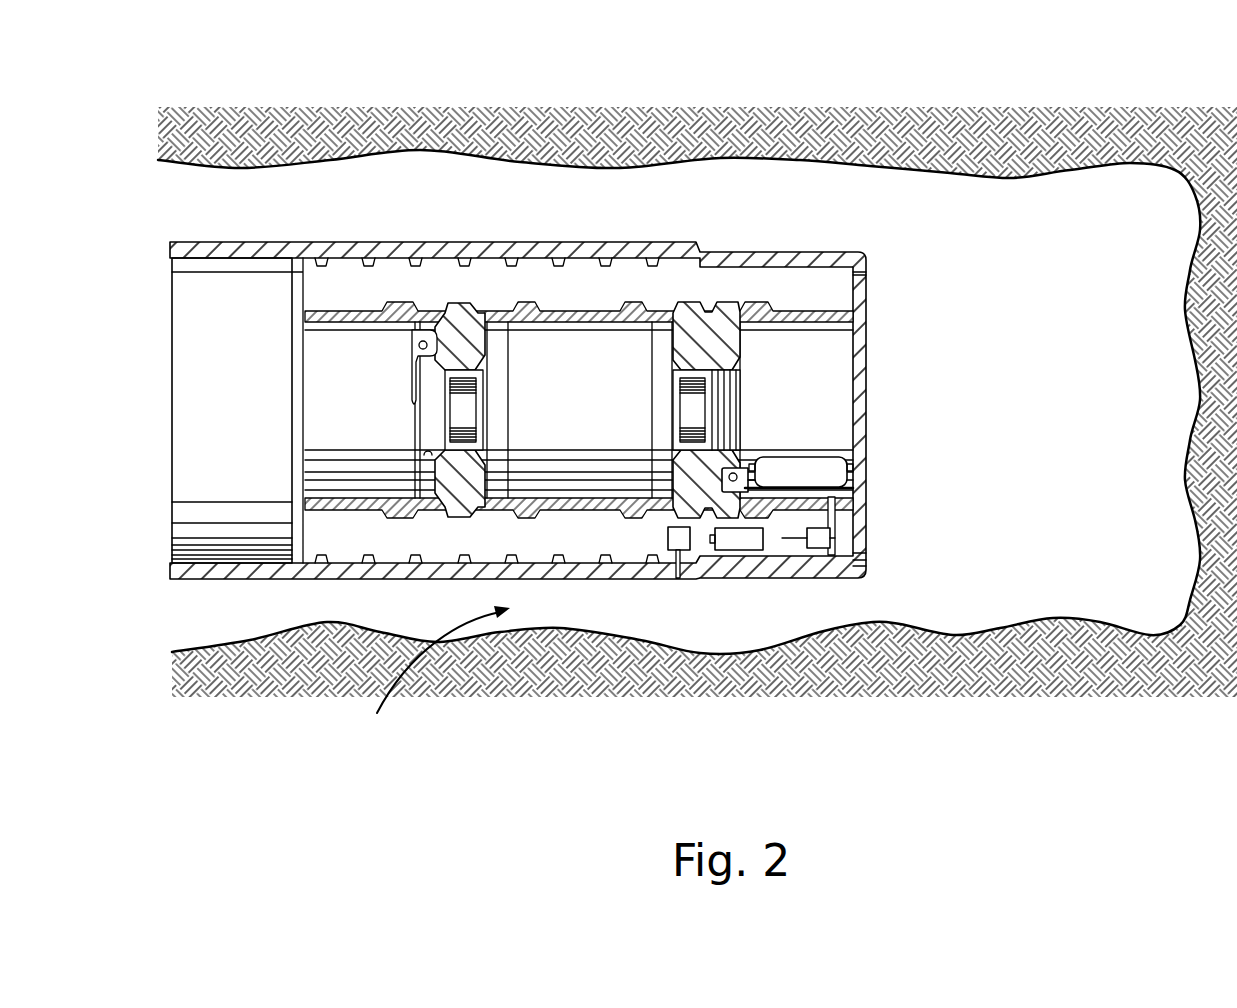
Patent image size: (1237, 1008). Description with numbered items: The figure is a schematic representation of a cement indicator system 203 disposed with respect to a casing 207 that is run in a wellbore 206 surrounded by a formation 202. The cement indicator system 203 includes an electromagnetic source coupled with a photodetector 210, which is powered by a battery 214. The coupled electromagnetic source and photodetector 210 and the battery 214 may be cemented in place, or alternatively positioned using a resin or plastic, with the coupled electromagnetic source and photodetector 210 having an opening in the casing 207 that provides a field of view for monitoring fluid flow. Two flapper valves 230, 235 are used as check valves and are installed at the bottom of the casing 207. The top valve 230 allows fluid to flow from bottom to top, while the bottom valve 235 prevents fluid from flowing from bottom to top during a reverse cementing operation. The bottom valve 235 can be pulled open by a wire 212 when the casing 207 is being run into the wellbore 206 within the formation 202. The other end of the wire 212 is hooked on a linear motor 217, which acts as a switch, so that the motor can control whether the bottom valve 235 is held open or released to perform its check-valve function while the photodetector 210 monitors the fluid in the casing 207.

The formation 202 is at (843, 152).
The wellbore 206 is at (960, 192).
The casing 207 is at (277, 245).
The top flapper valve 230 is at (457, 337).
The bottom flapper valve 235 is at (696, 327).
The wire 212 is at (840, 520).
The linear motor 217 is at (808, 547).
The battery 214 is at (738, 551).
The coupled electromagnetic source and photodetector 210 is at (673, 537).
The cement indicator system 203 is at (429, 677).